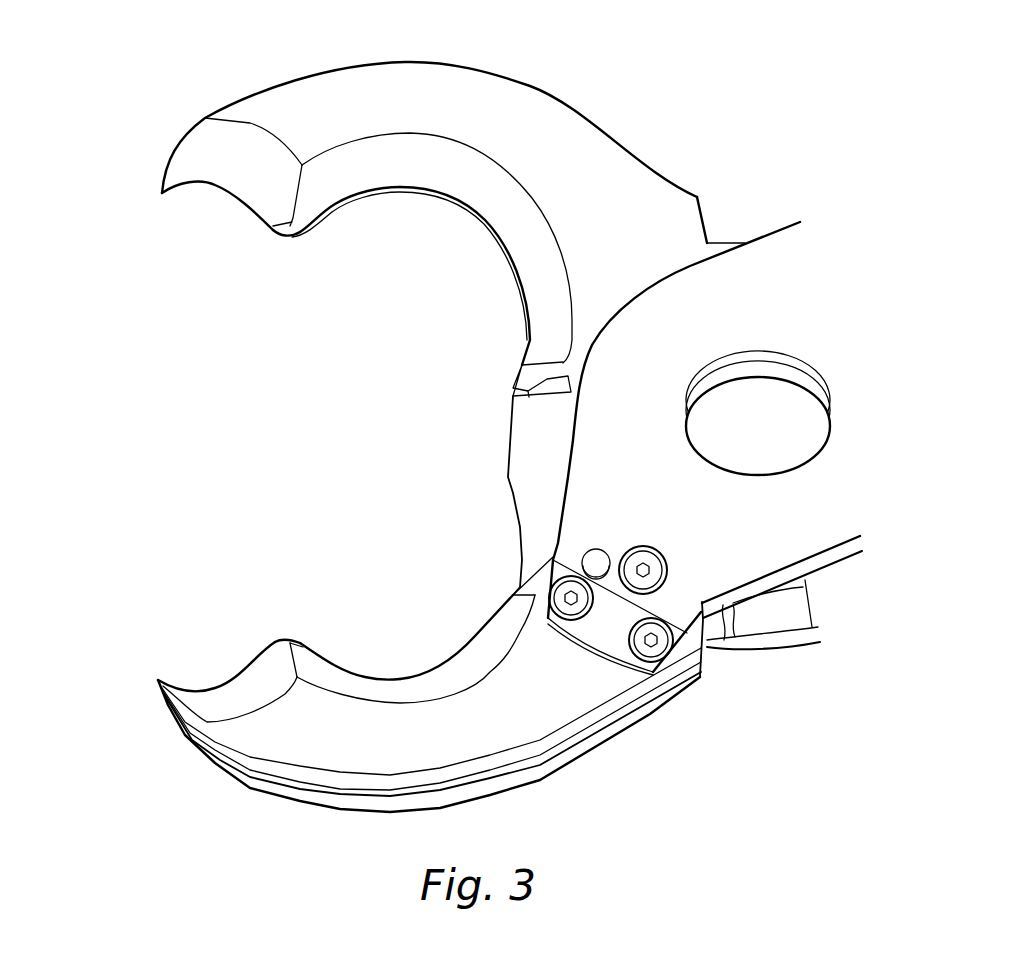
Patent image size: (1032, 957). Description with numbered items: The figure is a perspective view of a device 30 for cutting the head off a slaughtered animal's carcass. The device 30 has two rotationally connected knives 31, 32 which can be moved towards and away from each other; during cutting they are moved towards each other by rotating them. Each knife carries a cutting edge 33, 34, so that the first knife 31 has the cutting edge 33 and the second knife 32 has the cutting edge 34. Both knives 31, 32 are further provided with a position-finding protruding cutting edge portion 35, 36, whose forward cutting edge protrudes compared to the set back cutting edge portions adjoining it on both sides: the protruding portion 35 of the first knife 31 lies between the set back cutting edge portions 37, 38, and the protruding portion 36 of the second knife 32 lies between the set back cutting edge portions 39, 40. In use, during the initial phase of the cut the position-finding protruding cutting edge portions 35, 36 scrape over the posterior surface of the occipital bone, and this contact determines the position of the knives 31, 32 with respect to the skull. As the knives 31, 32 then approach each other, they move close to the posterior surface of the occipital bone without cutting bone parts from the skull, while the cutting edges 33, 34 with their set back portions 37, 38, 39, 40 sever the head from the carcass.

The device for cutting the head off a slaughtered animal's carcass 30 is at (140, 72).
The knife 31 is at (514, 75).
The knife 32 is at (318, 813).
The cutting edge 33 is at (346, 205).
The cutting edge 34 is at (360, 668).
The position-finding protruding cutting edge portion 35 is at (286, 240).
The position-finding protruding cutting edge portion 36 is at (284, 637).
The set back cutting edge portion 37 is at (224, 193).
The set back cutting edge portion 38 is at (440, 197).
The set back cutting edge portion 39 is at (223, 677).
The set back cutting edge portion 40 is at (436, 672).